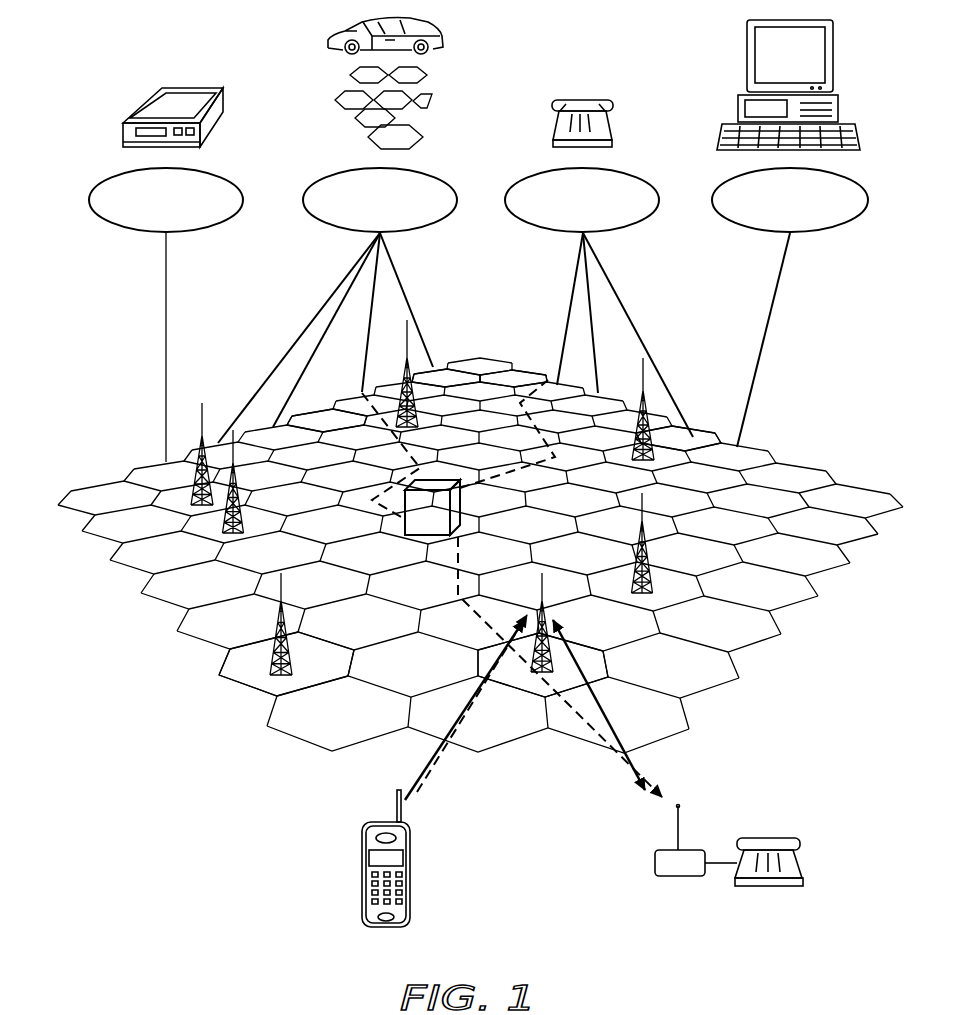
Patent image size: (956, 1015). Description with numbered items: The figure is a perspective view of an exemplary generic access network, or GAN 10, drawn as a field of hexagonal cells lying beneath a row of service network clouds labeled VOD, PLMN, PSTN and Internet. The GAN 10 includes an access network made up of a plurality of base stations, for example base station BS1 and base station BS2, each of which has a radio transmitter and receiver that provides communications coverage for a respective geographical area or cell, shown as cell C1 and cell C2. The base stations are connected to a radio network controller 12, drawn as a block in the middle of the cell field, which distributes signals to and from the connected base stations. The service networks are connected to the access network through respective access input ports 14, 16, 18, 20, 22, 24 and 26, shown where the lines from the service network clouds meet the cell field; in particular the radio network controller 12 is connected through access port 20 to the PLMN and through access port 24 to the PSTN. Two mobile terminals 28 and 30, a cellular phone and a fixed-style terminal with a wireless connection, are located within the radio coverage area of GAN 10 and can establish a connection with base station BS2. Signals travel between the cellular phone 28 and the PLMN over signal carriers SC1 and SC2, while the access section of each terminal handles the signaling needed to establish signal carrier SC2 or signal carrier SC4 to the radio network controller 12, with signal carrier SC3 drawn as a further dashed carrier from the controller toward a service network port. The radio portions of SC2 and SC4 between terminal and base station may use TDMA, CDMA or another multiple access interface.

The generic access network (GAN) 10 is at (184, 754).
The radio network controller (RNC) 12 is at (438, 525).
The access input port 14 is at (166, 462).
The access input port 16 is at (212, 438).
The access input port 18 is at (273, 427).
The access input port 20 is at (362, 390).
The access input port 22 is at (433, 367).
The access input port 24 is at (558, 382).
The access input port 26 is at (737, 447).
The mobile terminal 28 is at (413, 880).
The mobile terminal 30 is at (772, 886).
The signal carrier SC1 is at (380, 500).
The signal carrier SC2 is at (466, 780).
The signal carrier SC3 is at (525, 387).
The signal carrier SC4 is at (632, 778).
The base station BS1 is at (272, 609).
The base station BS2 is at (555, 610).
The cell C1 is at (258, 677).
The cell C2 is at (592, 658).